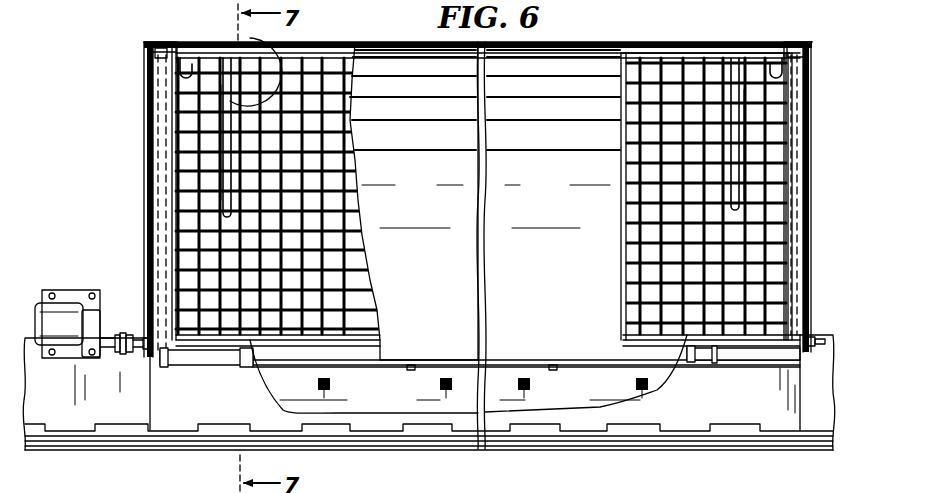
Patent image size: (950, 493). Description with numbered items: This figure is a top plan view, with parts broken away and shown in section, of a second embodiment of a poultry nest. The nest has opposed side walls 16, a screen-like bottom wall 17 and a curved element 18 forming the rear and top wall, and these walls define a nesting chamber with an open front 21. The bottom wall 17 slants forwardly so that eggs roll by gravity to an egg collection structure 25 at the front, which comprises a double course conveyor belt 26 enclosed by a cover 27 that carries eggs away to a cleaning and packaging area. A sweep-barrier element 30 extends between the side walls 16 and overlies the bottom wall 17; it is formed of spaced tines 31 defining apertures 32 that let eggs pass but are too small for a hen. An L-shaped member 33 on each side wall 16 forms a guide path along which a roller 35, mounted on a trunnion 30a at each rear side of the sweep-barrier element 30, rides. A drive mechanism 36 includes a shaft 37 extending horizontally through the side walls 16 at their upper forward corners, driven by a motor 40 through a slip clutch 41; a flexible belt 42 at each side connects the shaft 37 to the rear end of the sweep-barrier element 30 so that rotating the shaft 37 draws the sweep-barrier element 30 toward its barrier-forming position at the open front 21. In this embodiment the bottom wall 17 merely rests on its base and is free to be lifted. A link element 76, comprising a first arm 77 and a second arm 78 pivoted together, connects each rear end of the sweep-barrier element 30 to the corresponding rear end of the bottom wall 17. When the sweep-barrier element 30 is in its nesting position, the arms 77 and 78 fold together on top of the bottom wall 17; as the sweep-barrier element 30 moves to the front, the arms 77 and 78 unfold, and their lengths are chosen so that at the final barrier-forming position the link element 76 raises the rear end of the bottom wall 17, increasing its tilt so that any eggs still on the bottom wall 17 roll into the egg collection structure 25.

The side wall 16 is at (162, 85).
The bottom wall 17 is at (670, 80).
The curved element 18 is at (430, 197).
The open front 21 is at (242, 368).
The egg collection structure 25 is at (491, 452).
The conveyor belt 26 is at (405, 403).
The cover 27 is at (133, 412).
The sweep-barrier element 30 is at (190, 368).
The trunnion 30a is at (822, 30).
The tine 31 is at (347, 134).
The aperture 32 is at (347, 101).
The L-shaped member 33 is at (165, 190).
The roller 35 is at (162, 42).
The drive mechanism 36 is at (58, 289).
The shaft 37 is at (222, 366).
The motor 40 is at (52, 313).
The slip clutch 41 is at (122, 334).
The flexible belt 42 is at (172, 113).
The link element 76 is at (222, 125).
The first arm 77 is at (814, 82).
The second arm 78 is at (216, 80).